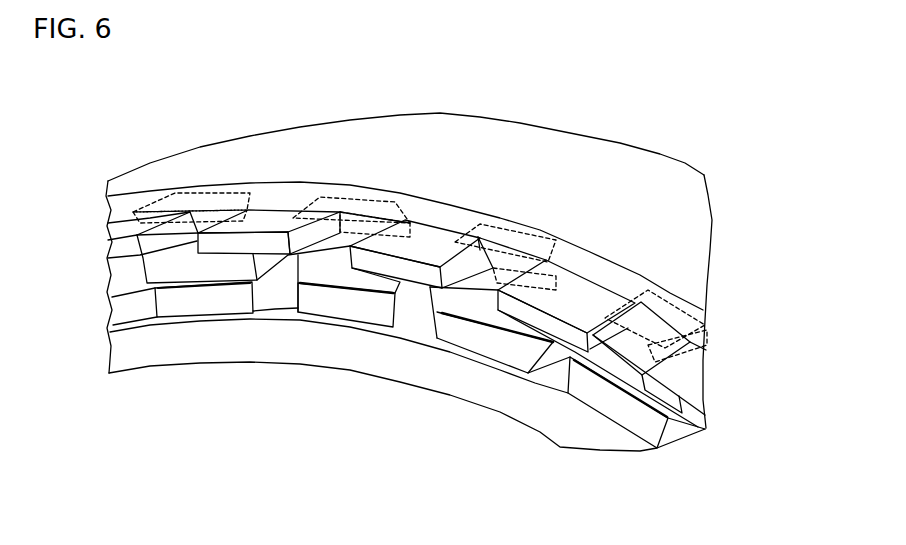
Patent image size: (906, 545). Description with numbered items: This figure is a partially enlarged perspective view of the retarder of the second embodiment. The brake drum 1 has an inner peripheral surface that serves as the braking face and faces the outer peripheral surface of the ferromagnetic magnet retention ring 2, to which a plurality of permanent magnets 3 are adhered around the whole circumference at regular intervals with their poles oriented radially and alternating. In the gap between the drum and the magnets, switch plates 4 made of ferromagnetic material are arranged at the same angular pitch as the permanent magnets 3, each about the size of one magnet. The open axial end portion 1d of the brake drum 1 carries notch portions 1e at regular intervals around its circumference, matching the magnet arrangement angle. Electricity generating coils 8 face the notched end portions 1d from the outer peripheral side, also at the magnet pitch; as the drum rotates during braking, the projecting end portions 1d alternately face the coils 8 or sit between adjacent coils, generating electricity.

The brake drum 1 is at (682, 156).
The end portion 1d is at (492, 249).
The notch portion 1e is at (357, 339).
The magnet retention ring 2 is at (407, 403).
The permanent magnet 3 is at (420, 399).
The switch plate 4 is at (421, 352).
The electricity generating coil 8 is at (413, 217).